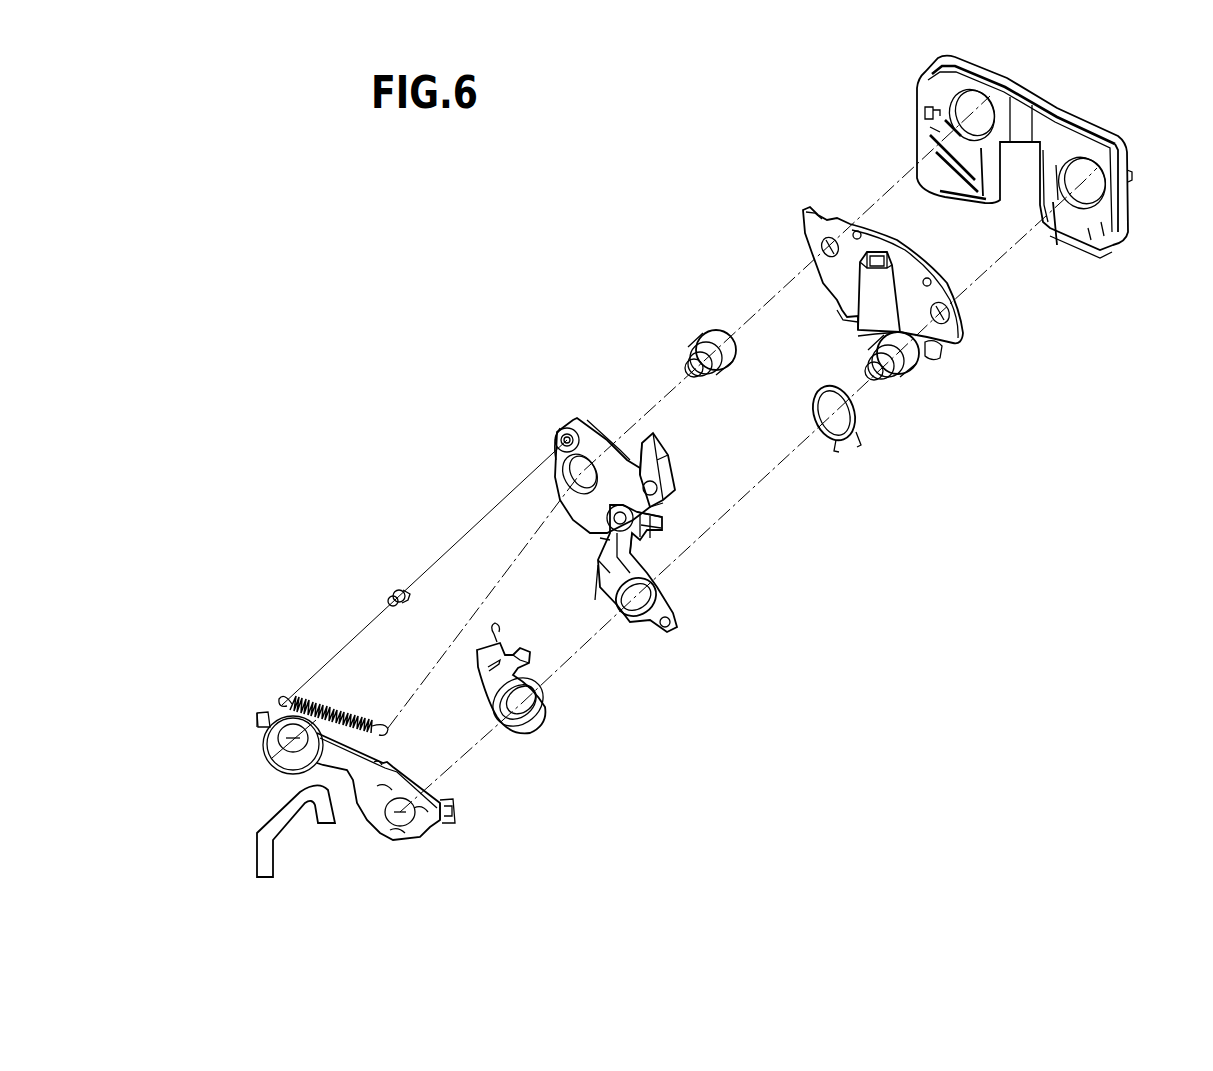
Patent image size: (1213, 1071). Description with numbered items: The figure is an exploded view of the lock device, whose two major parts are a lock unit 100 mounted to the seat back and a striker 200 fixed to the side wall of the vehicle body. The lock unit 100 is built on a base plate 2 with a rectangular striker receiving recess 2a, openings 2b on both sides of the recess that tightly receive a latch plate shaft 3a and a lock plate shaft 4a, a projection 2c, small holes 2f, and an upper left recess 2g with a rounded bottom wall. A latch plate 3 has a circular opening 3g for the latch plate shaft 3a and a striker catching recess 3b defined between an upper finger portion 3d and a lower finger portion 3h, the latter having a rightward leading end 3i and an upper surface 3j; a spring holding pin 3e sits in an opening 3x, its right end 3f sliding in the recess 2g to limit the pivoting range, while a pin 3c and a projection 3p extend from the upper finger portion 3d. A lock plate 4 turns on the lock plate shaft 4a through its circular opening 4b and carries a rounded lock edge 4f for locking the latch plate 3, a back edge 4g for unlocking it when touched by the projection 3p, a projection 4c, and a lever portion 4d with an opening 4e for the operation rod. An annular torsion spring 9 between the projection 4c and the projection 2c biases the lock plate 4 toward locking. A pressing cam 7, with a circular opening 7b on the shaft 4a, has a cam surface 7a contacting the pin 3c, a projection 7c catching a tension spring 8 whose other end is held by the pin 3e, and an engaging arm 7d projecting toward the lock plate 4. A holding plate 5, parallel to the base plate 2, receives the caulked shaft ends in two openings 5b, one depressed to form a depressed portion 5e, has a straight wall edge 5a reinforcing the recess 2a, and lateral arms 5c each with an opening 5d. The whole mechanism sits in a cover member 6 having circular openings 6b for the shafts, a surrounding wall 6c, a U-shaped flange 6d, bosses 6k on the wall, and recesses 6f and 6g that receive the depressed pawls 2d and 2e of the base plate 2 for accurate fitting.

The lock unit 100 is at (575, 265).
The striker 200 is at (258, 812).
The base plate 2 is at (909, 297).
The striker receiving recess 2a is at (899, 303).
The openings 2b is at (821, 246).
The projection 2c is at (944, 354).
The pawls 2d is at (880, 334).
The pawl 2e is at (878, 256).
The small hole 2f is at (857, 230).
The recess 2g is at (835, 210).
The latch plate 3 is at (628, 412).
The latch plate shaft 3a is at (680, 322).
The striker catching recess 3b is at (602, 418).
The pin 3c is at (658, 486).
The upper finger portion 3d is at (674, 508).
The spring holding pin 3e is at (367, 555).
The right end 3f is at (397, 589).
The circular opening 3g is at (566, 474).
The lower finger portion 3h is at (648, 540).
The leading end 3i is at (648, 532).
The upper surface 3j is at (658, 522).
The projection 3p is at (656, 443).
The opening 3x is at (564, 428).
The lock plate 4 is at (646, 605).
The lock plate shaft 4a is at (922, 404).
The circular opening 4b is at (650, 600).
The projection 4c is at (660, 625).
The lever portion 4d is at (603, 538).
The opening 4e is at (607, 522).
The rounded lock edge 4f is at (607, 570).
The back edge 4g is at (598, 587).
The holding plate 5 is at (387, 757).
The straight wall edge 5a is at (347, 815).
The openings 5b is at (287, 738).
The arms 5c is at (257, 716).
The opening 5d is at (457, 802).
The depressed portion 5e is at (275, 716).
The cover member 6 is at (1025, 185).
The circular openings 6b is at (957, 105).
The surrounding wall 6c is at (1118, 206).
The U-shaped flange 6d is at (1006, 178).
The recesses 6f is at (985, 186).
The recess 6g is at (1020, 125).
The bosses 6k is at (922, 112).
The pressing cam 7 is at (540, 674).
The cam surface 7a is at (481, 648).
The circular opening 7b is at (546, 700).
The projection 7c is at (494, 628).
The engaging arm 7d is at (525, 652).
The tension spring 8 is at (325, 706).
The annular torsion spring 9 is at (890, 468).